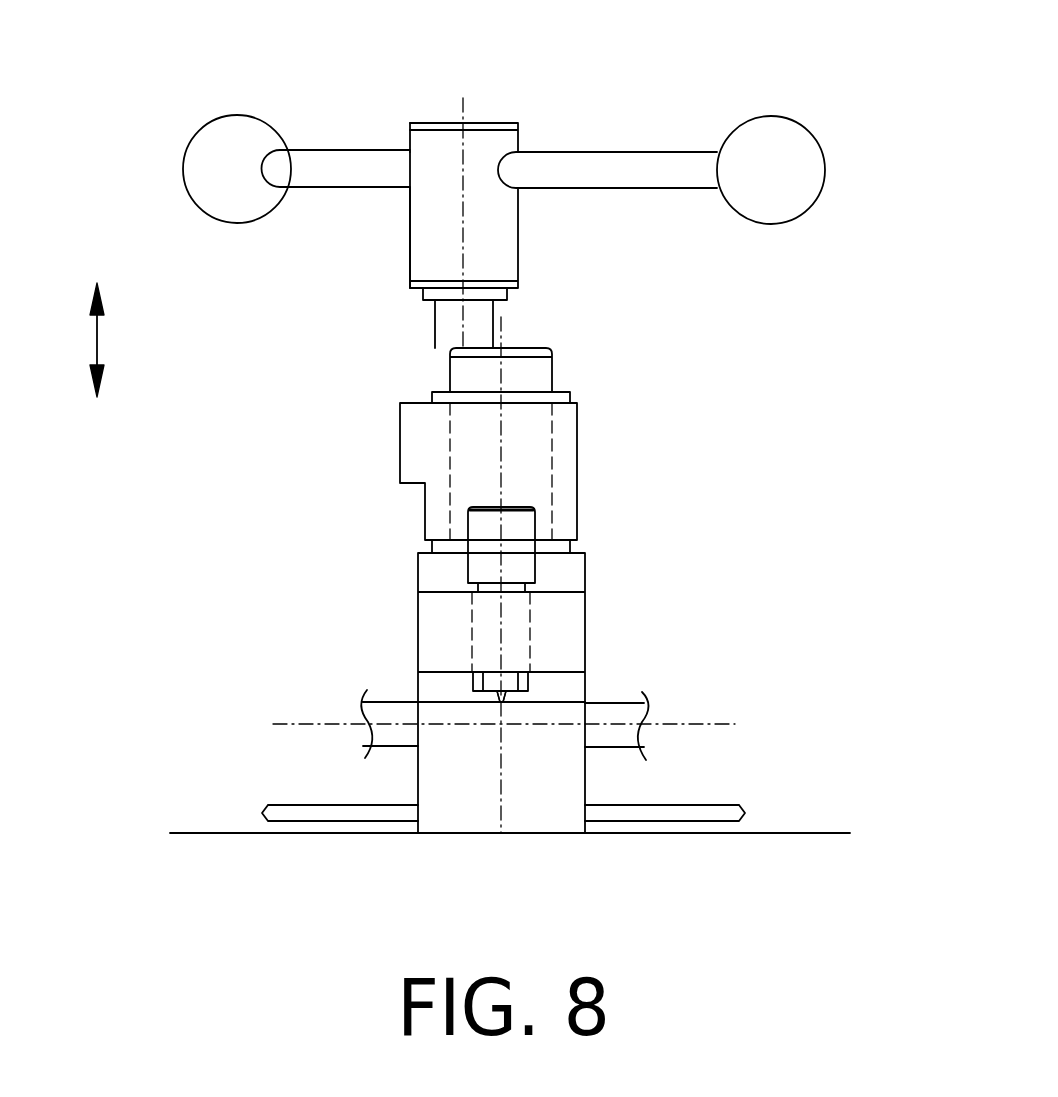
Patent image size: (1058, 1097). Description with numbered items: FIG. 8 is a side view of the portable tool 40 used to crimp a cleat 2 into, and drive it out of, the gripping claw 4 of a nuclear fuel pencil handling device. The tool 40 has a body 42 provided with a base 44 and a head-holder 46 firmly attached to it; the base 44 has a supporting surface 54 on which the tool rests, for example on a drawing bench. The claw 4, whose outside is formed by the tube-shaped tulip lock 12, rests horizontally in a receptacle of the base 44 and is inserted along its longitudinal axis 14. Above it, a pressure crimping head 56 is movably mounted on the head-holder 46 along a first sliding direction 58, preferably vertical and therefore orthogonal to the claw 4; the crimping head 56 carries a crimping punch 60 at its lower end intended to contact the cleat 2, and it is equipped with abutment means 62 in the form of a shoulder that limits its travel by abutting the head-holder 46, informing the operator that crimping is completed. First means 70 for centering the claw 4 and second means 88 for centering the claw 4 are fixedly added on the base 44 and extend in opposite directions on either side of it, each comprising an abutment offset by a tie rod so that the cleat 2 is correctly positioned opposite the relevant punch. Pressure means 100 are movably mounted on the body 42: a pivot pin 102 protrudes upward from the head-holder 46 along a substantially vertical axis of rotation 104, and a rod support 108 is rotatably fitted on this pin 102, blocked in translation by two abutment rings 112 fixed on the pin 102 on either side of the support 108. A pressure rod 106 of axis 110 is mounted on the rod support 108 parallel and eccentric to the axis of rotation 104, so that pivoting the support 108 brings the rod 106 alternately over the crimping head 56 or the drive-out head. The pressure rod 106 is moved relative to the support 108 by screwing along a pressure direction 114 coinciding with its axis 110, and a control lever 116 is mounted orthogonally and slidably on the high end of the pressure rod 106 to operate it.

The cleat 2 is at (498, 702).
The gripping claw 4 is at (395, 688).
The tulip lock 12 is at (390, 740).
The longitudinal axis 14 is at (297, 722).
The tool 40 is at (510, 586).
The body 42 is at (560, 808).
The base 44 is at (485, 795).
The head-holder 46 is at (570, 623).
The supporting surface 54 is at (487, 833).
The pressure crimping head 56 is at (537, 520).
The first sliding direction 58 is at (502, 450).
The crimping punch 60 is at (513, 698).
The abutment means 62 is at (518, 604).
The first means for centering the claw 70 is at (389, 826).
The second means for centering the claw 88 is at (666, 820).
The pressure means 100 is at (488, 477).
The pivot pin 102 is at (542, 373).
The axis of rotation 104 is at (502, 423).
The pressure rod 106 is at (445, 330).
The rod support 108 is at (412, 450).
The axis of the pressure rod 110 is at (463, 112).
The abutment rings 112 is at (432, 397).
The pressure direction 114 is at (97, 340).
The control lever 116 is at (615, 160).